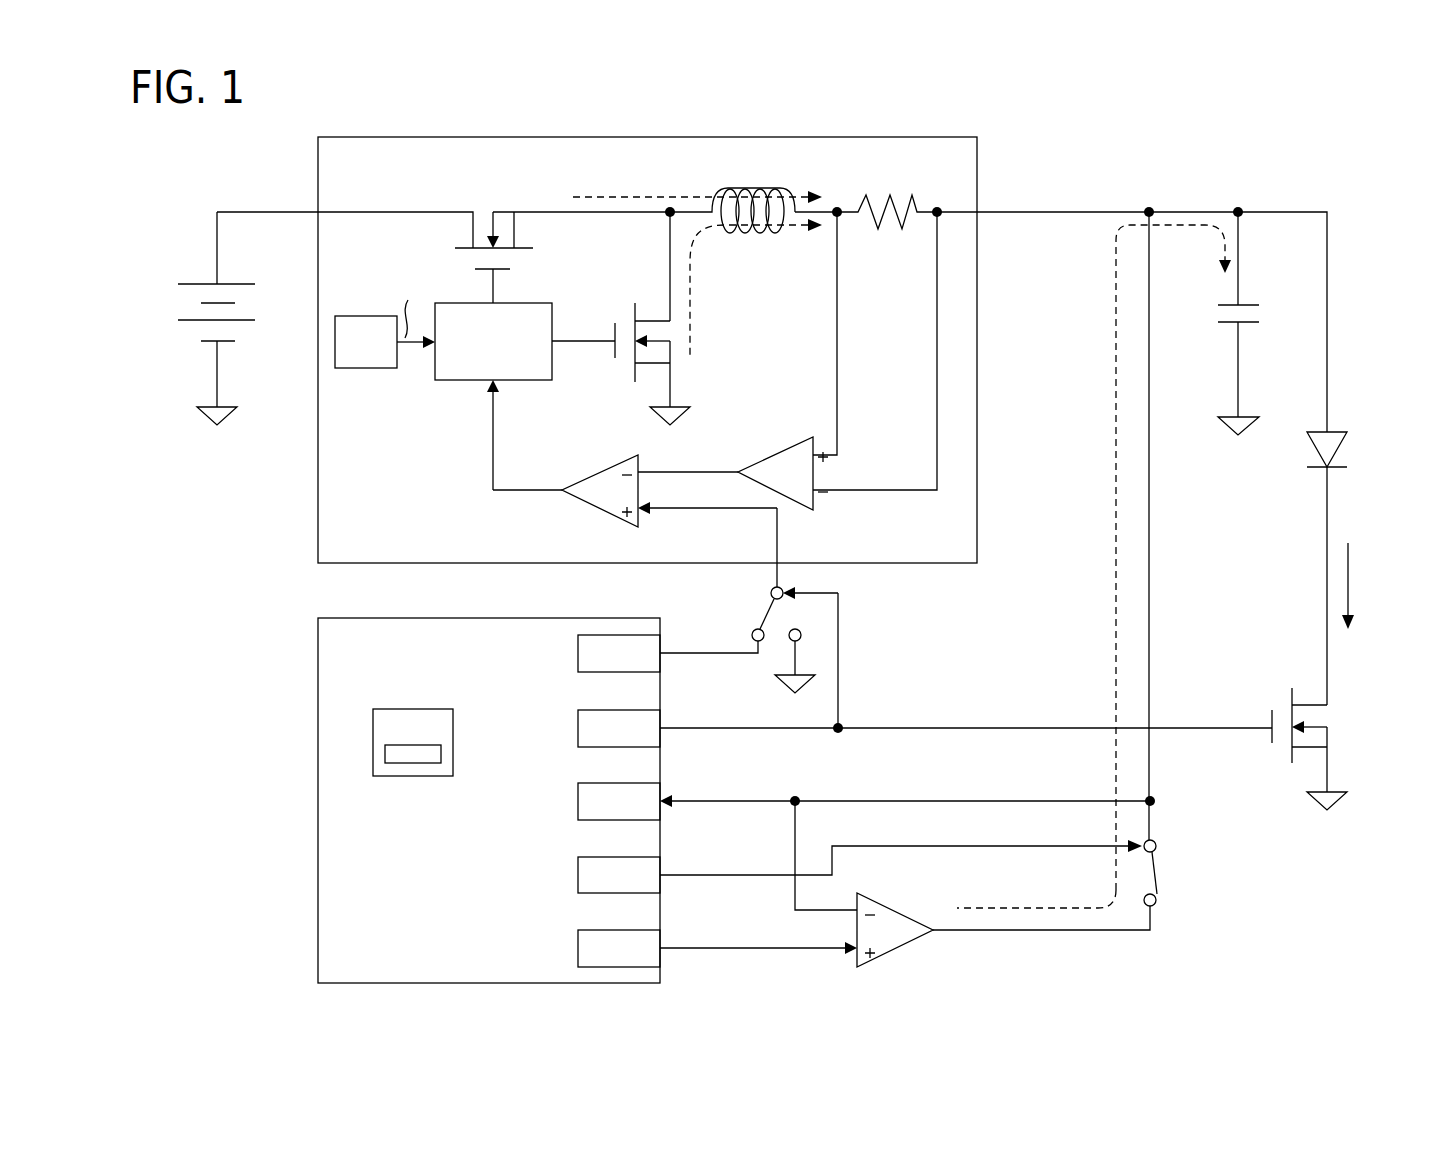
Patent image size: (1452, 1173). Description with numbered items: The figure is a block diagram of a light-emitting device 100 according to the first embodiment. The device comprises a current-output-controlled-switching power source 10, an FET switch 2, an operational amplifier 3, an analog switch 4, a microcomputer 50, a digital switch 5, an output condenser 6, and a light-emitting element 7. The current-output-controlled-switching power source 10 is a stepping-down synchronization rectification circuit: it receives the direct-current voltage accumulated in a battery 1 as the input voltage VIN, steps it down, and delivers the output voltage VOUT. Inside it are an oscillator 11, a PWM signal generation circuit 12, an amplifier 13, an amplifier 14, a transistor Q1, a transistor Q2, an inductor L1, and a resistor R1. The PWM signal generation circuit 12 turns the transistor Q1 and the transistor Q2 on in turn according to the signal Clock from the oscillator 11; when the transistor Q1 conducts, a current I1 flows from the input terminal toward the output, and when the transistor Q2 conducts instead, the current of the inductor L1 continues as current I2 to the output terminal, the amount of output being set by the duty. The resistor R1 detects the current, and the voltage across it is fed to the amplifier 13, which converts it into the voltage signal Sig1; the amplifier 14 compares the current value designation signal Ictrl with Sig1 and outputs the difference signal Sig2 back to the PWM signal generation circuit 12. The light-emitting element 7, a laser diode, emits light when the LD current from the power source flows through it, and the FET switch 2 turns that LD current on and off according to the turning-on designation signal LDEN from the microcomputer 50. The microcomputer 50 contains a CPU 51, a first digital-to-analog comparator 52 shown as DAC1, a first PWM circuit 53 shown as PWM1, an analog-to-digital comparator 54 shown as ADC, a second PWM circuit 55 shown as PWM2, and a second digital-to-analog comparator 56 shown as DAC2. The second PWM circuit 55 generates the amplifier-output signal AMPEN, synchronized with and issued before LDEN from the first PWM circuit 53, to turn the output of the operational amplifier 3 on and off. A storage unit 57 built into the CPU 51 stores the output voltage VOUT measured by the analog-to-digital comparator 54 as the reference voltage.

The light-emitting device 100 is at (1362, 166).
The current-output-controlled-switching power source 10 is at (933, 137).
The battery 1 is at (235, 282).
The oscillator (OSC) 11 is at (357, 316).
The PWM signal generation circuit 12 is at (518, 302).
The amplifier 13 is at (797, 441).
The amplifier 14 is at (630, 460).
The transistor Q1 is at (453, 247).
The transistor Q2 is at (634, 310).
The inductor L1 is at (762, 238).
The resistor R1 is at (888, 230).
The microcomputer 50 is at (605, 618).
The CPU 51 is at (400, 709).
The first digital-to-analog comparator 52 is at (578, 650).
The first PWM circuit 53 is at (578, 725).
The analog-to-digital comparator 54 is at (578, 798).
The second PWM circuit 55 is at (578, 872).
The second digital-to-analog comparator 56 is at (578, 945).
The storage unit 57 is at (411, 763).
The FET switch 2 is at (1272, 712).
The operational amplifier 3 is at (885, 903).
The analog switch 4 is at (770, 612).
The digital switch 5 is at (1157, 876).
The output condenser 6 is at (1250, 304).
The light-emitting element 7 is at (1340, 431).